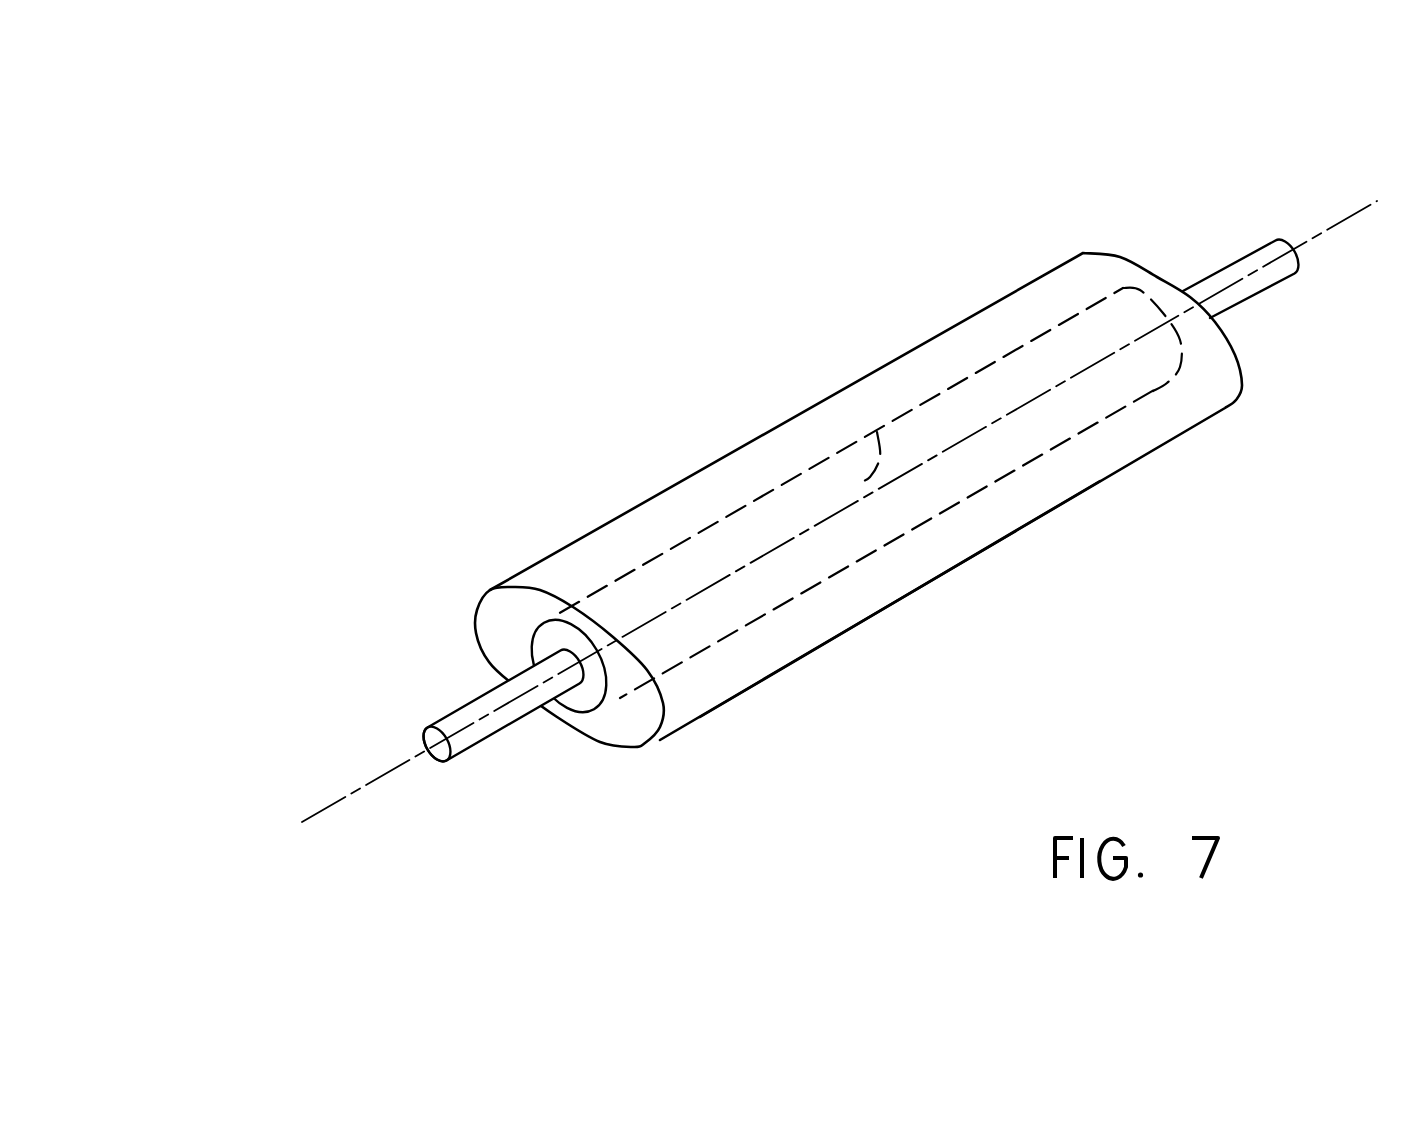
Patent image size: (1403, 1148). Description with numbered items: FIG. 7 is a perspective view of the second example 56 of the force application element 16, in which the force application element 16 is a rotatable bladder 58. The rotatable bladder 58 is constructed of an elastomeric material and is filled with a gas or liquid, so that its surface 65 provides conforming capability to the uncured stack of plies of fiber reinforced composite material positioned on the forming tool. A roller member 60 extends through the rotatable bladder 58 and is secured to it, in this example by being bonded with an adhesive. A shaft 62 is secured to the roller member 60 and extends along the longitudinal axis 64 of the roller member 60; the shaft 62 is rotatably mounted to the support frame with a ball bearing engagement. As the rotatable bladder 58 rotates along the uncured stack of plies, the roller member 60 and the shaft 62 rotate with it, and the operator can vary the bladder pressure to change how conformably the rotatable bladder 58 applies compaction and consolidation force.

The force application element 16 is at (1035, 530).
The second example of force application element 56 is at (866, 443).
The rotatable bladder 58 is at (965, 582).
The roller member 60 is at (877, 432).
The shaft 62 is at (470, 735).
The longitudinal axis 64 is at (1348, 220).
The surface 65 is at (520, 578).